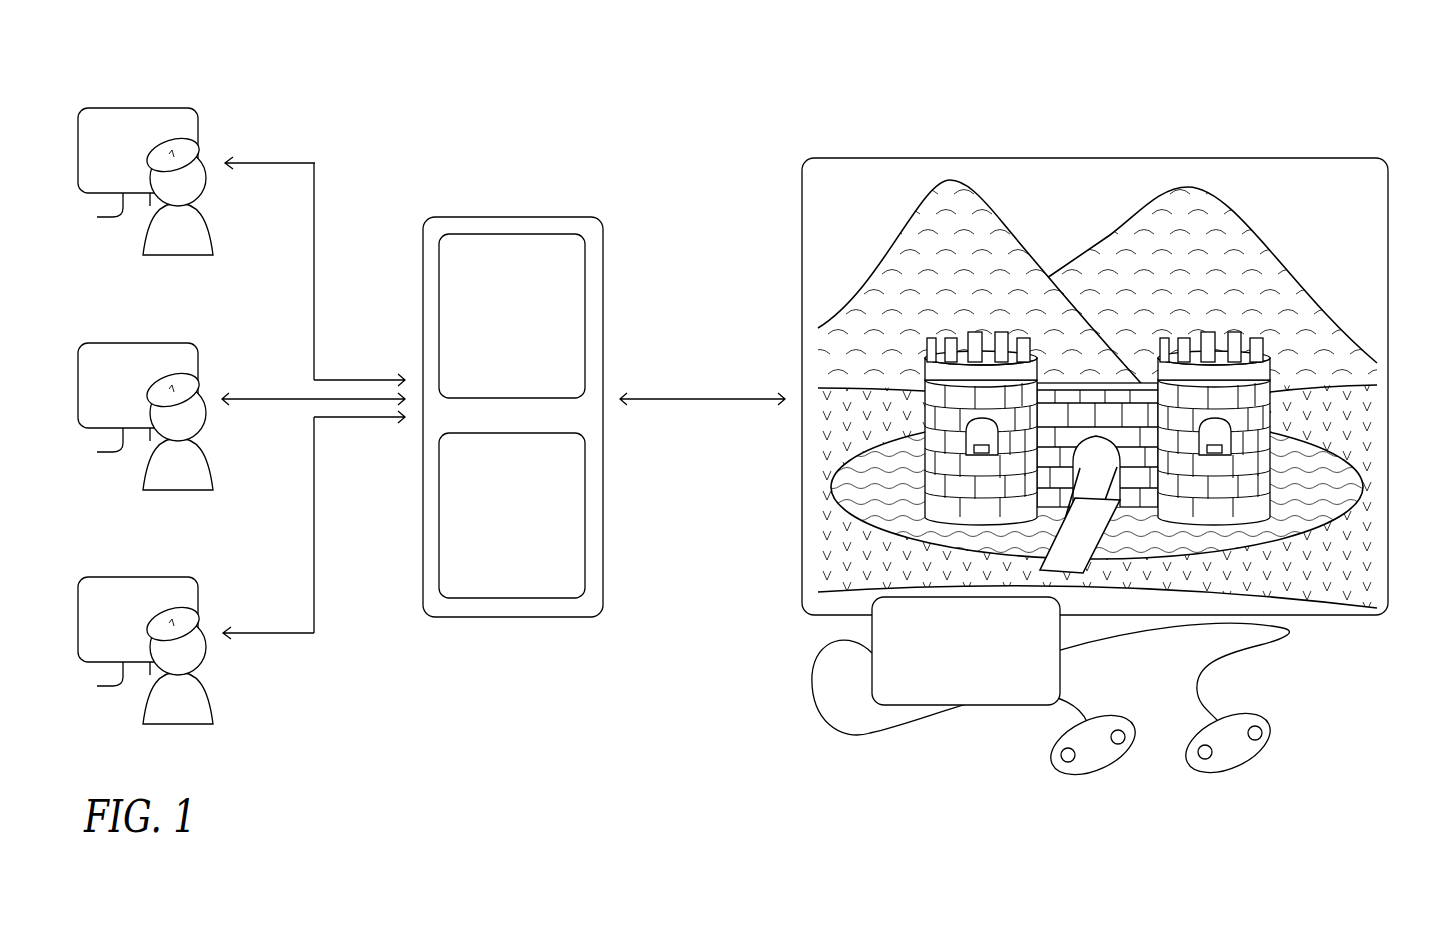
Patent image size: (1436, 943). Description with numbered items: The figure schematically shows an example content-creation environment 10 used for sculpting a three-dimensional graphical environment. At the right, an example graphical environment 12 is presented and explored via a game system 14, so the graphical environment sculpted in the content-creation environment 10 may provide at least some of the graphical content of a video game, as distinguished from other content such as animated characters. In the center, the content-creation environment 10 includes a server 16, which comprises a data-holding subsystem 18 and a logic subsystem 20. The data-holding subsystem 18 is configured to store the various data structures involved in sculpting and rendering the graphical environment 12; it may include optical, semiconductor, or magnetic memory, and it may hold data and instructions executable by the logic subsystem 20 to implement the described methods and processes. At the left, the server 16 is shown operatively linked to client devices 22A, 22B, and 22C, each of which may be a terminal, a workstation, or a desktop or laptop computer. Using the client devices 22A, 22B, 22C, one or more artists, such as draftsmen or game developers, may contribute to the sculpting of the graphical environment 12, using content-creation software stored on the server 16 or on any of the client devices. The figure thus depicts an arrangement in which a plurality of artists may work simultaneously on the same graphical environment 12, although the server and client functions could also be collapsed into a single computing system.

The content-creation environment 10 is at (715, 105).
The graphical environment 12 is at (858, 244).
The game system 14 is at (979, 661).
The server 16 is at (513, 217).
The data-holding subsystem 18 is at (524, 329).
The logic subsystem 20 is at (524, 529).
The client device 22A is at (156, 140).
The client device 22B is at (156, 375).
The client device 22C is at (156, 609).